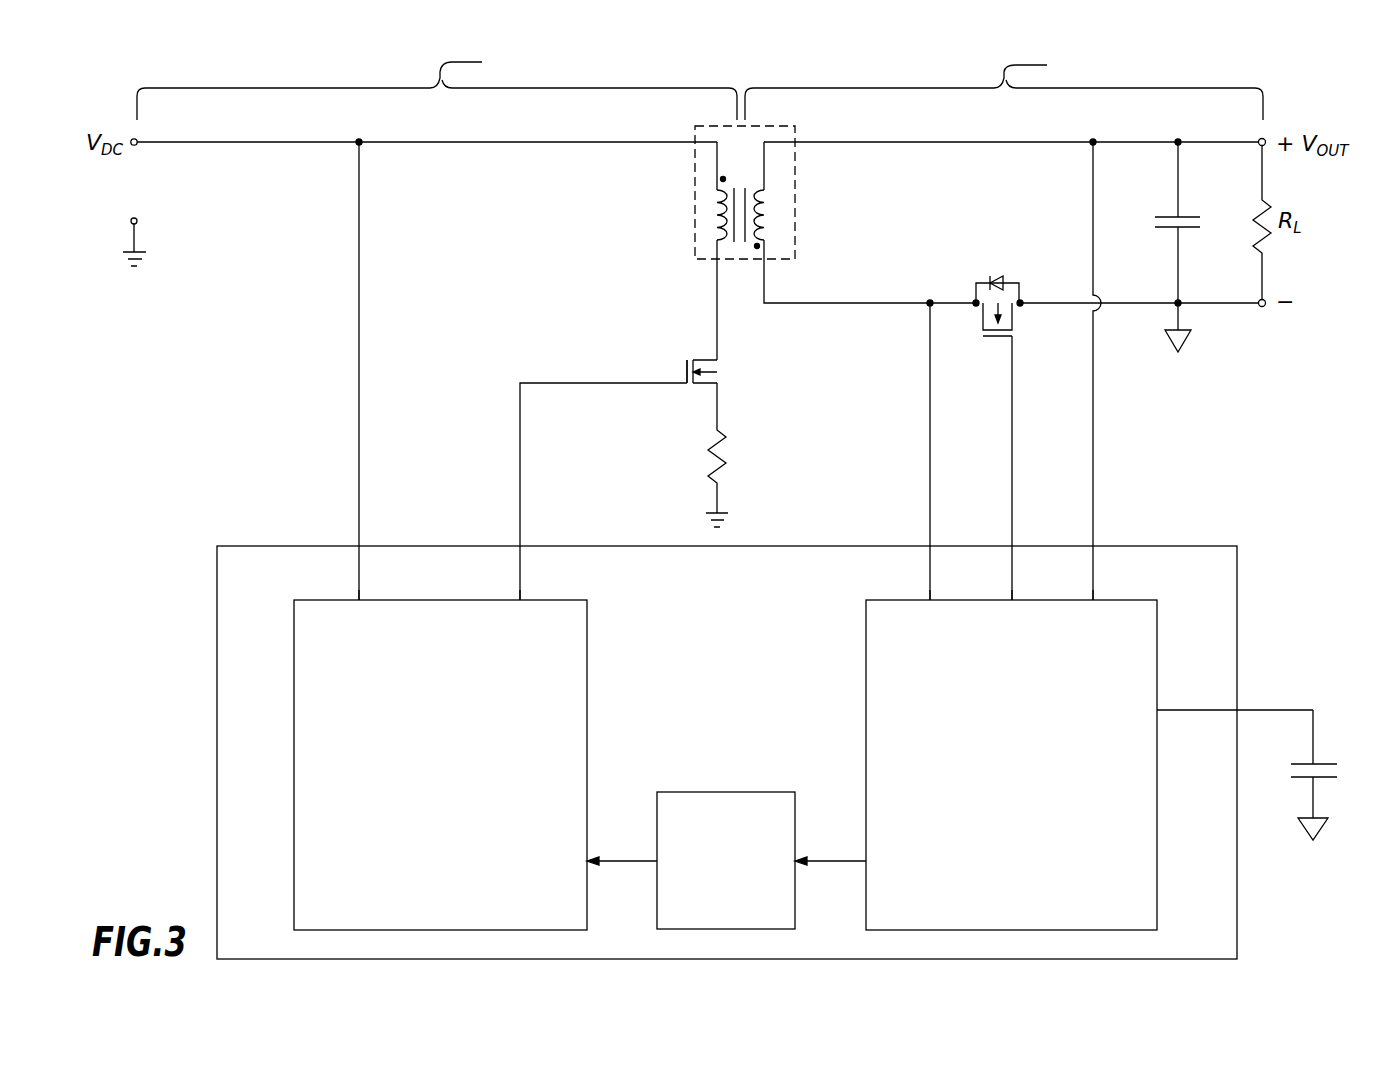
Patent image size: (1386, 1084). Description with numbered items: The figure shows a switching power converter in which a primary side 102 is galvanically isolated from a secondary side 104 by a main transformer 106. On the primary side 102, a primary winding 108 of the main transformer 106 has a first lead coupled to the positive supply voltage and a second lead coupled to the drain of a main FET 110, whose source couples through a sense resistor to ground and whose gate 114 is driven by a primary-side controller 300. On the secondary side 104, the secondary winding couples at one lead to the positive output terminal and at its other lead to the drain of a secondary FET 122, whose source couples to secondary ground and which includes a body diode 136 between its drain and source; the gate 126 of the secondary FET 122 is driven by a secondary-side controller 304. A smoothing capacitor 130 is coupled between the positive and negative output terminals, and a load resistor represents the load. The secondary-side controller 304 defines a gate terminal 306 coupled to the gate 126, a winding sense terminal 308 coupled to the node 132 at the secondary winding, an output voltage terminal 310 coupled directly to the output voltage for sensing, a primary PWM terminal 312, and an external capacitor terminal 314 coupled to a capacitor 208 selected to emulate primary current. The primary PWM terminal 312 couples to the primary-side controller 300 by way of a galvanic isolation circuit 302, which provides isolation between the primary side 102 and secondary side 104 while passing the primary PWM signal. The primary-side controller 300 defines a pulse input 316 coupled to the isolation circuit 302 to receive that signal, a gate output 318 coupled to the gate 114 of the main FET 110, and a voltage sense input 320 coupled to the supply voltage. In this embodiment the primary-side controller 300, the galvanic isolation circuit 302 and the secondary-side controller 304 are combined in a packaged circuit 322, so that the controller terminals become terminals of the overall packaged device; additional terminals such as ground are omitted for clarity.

The primary side 102 is at (437, 83).
The secondary side 104 is at (1004, 79).
The main transformer 106 is at (805, 182).
The primary winding 108 is at (712, 210).
The main FET 110 is at (727, 368).
The gate 114 is at (683, 381).
The secondary FET 122 is at (768, 204).
The gate 126 is at (1010, 338).
The smoothing capacitor 130 is at (1170, 212).
The node 132 is at (930, 304).
The body diode 136 is at (997, 272).
The capacitor 208 is at (1313, 762).
The primary-side controller 300 is at (440, 765).
The galvanic isolation circuit 302 is at (757, 792).
The secondary-side controller 304 is at (1011, 765).
The gate terminal 306 is at (1015, 599).
The winding sense terminal 308 is at (928, 599).
The output voltage terminal 310 is at (1095, 599).
The primary PWM terminal 312 is at (866, 860).
The external capacitor terminal 314 is at (1158, 708).
The pulse input 316 is at (587, 861).
The gate output 318 is at (522, 600).
The voltage sense input 320 is at (362, 600).
The packaged circuit 322 is at (1175, 546).